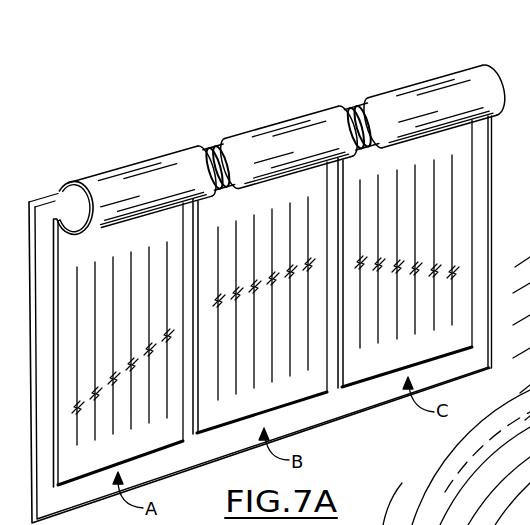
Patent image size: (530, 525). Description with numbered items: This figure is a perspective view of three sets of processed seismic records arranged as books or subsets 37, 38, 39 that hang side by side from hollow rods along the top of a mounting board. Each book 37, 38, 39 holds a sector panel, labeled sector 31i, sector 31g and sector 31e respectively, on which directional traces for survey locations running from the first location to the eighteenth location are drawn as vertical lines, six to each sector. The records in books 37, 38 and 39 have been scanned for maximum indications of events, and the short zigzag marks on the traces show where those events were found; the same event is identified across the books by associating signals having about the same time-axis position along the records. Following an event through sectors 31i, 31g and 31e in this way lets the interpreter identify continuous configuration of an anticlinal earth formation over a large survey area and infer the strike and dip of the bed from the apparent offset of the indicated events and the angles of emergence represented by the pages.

The first subset of records 37 is at (128, 165).
The second subset of records 38 is at (265, 125).
The third subset of records 39 is at (402, 87).
The sector A 31i is at (119, 334).
The sector B 31g is at (260, 298).
The sector C 31e is at (405, 254).